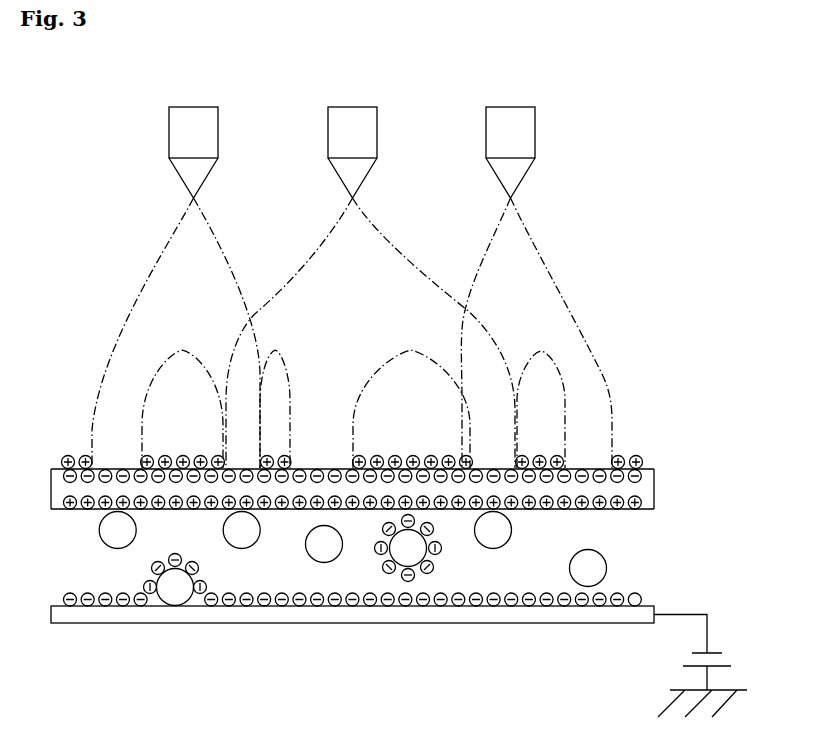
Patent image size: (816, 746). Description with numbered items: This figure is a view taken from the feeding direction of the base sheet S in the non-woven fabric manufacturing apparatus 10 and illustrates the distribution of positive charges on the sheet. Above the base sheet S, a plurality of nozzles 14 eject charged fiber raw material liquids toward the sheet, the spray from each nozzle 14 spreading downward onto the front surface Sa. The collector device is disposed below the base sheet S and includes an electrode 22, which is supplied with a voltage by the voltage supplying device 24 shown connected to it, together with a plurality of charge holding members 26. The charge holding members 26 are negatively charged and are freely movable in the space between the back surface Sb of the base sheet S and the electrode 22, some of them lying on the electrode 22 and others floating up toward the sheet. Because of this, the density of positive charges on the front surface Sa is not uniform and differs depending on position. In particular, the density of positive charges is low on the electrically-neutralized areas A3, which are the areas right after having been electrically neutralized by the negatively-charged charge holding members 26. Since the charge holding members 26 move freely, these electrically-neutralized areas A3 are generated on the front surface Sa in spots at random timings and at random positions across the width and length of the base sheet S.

The non-woven fabric manufacturing apparatus 10 is at (670, 179).
The nozzle 14 is at (192, 117).
The electrode 22 is at (353, 623).
The voltage supplying device 24 is at (697, 663).
The charge holding member 26 is at (129, 539).
The electrically-neutralized area A3 is at (93, 460).
The base sheet S is at (640, 490).
The front surface Sa is at (647, 467).
The back surface Sb is at (643, 511).